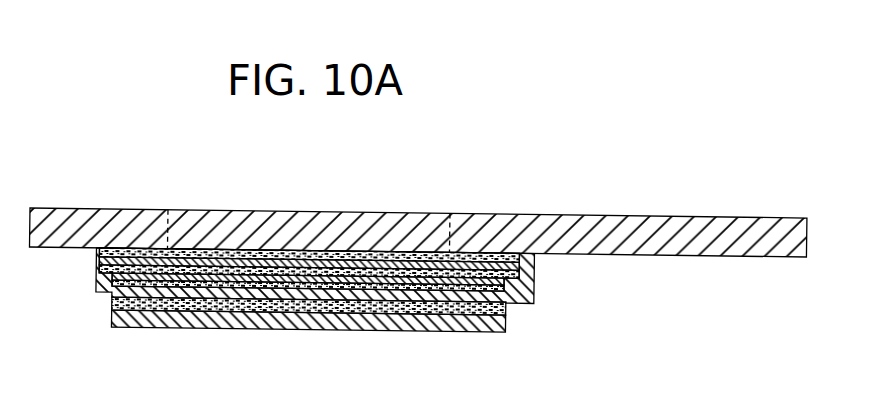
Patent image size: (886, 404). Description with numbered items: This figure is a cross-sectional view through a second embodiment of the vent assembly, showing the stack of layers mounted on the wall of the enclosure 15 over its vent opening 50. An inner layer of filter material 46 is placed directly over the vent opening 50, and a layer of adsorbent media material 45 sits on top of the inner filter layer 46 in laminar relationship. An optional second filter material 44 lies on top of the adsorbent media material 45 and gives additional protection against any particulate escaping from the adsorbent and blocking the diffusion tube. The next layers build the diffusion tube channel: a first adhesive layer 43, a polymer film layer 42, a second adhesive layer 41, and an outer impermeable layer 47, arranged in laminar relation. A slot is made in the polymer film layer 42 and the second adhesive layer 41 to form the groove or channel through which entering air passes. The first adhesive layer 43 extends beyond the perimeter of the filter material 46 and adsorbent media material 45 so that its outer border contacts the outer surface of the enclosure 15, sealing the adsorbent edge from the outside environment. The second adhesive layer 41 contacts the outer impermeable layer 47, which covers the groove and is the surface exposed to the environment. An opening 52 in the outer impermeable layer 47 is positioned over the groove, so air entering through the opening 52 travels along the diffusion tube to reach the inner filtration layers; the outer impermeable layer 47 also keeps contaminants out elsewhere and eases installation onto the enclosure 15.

The enclosure 15 is at (740, 214).
The vent opening 50 is at (284, 212).
The second adhesive layer 41 is at (478, 292).
The polymer film layer 42 is at (472, 282).
The first adhesive layer 43 is at (468, 275).
The second filter material 44 is at (463, 268).
The adsorbent media material 45 is at (458, 261).
The inner layer of filter material 46 is at (452, 254).
The outer impermeable layer 47 is at (540, 278).
The opening 52 is at (310, 333).